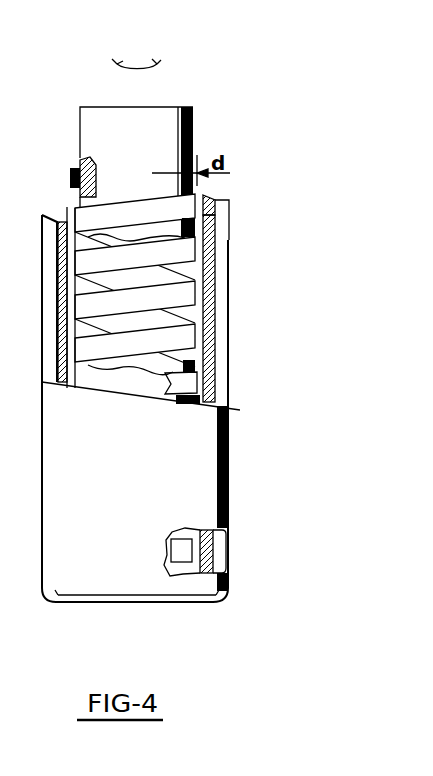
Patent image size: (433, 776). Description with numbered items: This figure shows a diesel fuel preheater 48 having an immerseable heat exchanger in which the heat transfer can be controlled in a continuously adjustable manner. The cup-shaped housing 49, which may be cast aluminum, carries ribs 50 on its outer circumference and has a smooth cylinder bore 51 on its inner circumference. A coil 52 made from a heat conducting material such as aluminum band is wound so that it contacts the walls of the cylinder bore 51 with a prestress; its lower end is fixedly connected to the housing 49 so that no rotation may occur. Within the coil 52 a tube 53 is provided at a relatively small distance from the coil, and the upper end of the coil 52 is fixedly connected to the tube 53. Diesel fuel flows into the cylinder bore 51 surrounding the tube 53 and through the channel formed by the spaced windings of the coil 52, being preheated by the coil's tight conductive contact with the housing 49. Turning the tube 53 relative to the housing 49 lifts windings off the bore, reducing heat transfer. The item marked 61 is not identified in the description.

The diesel fuel preheater 48 is at (197, 118).
The cup-shaped housing 49 is at (227, 232).
The ribs 50 is at (220, 273).
The cylinder bore 51 is at (195, 318).
The coil 52 is at (204, 349).
The tube 53 is at (220, 404).
The bearing ring 61 is at (204, 205).